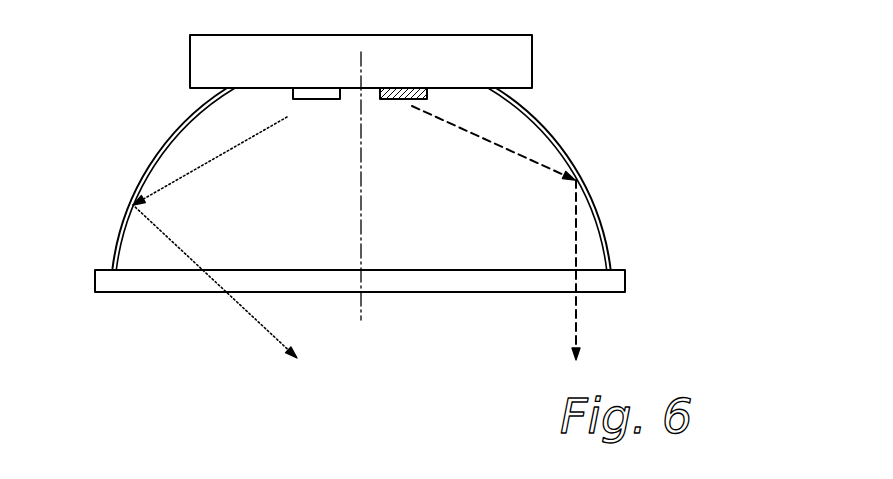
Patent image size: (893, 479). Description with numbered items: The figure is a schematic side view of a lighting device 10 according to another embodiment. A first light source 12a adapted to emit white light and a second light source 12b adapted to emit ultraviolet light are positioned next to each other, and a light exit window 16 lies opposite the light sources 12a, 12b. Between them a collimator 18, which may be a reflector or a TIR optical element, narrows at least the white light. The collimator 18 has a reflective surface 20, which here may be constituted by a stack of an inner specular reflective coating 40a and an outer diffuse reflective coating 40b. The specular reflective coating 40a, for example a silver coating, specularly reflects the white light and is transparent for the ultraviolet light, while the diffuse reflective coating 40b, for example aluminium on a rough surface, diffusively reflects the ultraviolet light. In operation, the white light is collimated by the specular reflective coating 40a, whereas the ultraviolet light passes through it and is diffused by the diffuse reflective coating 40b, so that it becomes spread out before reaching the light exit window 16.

The lighting device 10 is at (668, 65).
The first light source 12a is at (430, 92).
The second light source 12b is at (295, 92).
The light exit window 16 is at (625, 283).
The collimator 18 is at (558, 124).
The reflective surface 20 is at (361, 179).
The inner specular reflective coating 40a is at (537, 128).
The outer diffuse reflective coating 40b is at (575, 167).